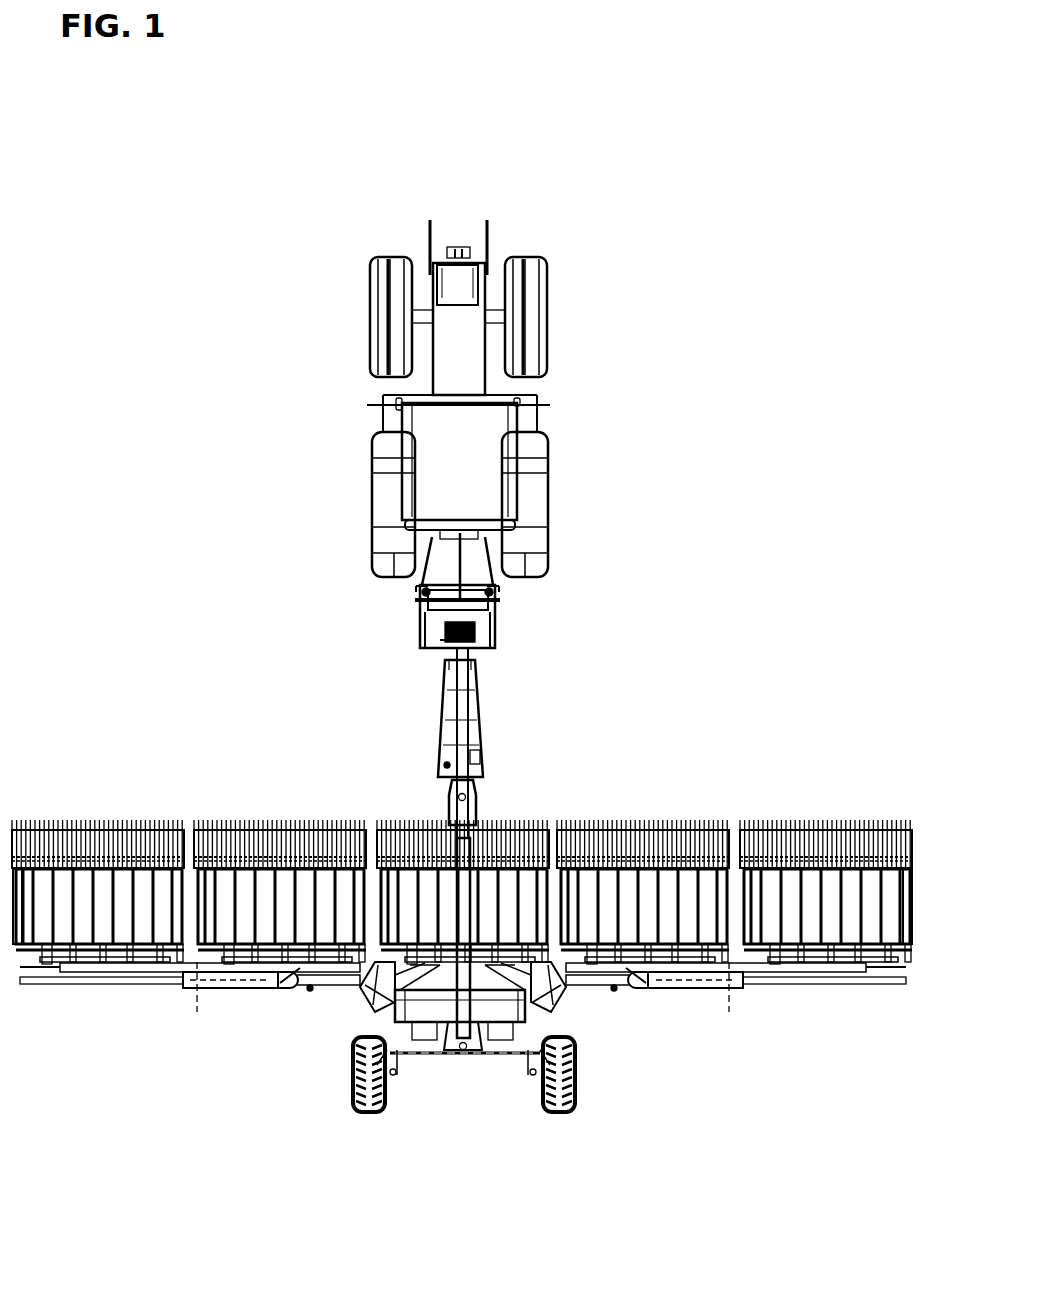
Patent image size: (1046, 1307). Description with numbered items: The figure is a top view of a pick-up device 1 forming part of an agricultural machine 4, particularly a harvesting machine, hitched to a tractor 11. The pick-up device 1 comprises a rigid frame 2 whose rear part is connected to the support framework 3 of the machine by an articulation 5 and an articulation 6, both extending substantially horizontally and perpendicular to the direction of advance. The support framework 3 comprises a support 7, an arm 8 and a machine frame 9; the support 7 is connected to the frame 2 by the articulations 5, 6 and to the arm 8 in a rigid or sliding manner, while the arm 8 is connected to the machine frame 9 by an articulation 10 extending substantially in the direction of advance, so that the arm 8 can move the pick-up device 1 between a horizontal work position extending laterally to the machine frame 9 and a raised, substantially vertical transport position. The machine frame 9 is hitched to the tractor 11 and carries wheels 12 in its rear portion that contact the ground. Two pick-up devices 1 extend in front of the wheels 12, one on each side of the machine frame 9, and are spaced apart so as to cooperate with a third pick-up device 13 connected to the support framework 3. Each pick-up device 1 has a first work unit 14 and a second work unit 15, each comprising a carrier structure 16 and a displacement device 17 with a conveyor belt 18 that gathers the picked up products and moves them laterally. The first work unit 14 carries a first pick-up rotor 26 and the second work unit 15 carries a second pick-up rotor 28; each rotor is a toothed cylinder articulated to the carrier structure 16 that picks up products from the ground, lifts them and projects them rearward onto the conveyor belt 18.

The pick-up device 1 is at (197, 818).
The rigid frame 2 is at (145, 975).
The support framework 3 is at (678, 990).
The agricultural machine 4 is at (483, 727).
The articulation 5 is at (218, 985).
The articulation 6 is at (197, 1013).
The support 7 is at (265, 987).
The arm 8 is at (310, 992).
The machine frame 9 is at (441, 1012).
The articulation 10 is at (368, 1003).
The tractor 11 is at (537, 493).
The wheels 12 is at (365, 1108).
The third pick-up device 13 is at (402, 818).
The first work unit 14 is at (100, 818).
The second work unit 15 is at (292, 818).
The carrier structure 16 is at (55, 962).
The displacement device 17 is at (25, 952).
The conveyor belt 18 is at (85, 930).
The first pick-up rotor 26 is at (157, 818).
The second pick-up rotor 28 is at (332, 818).